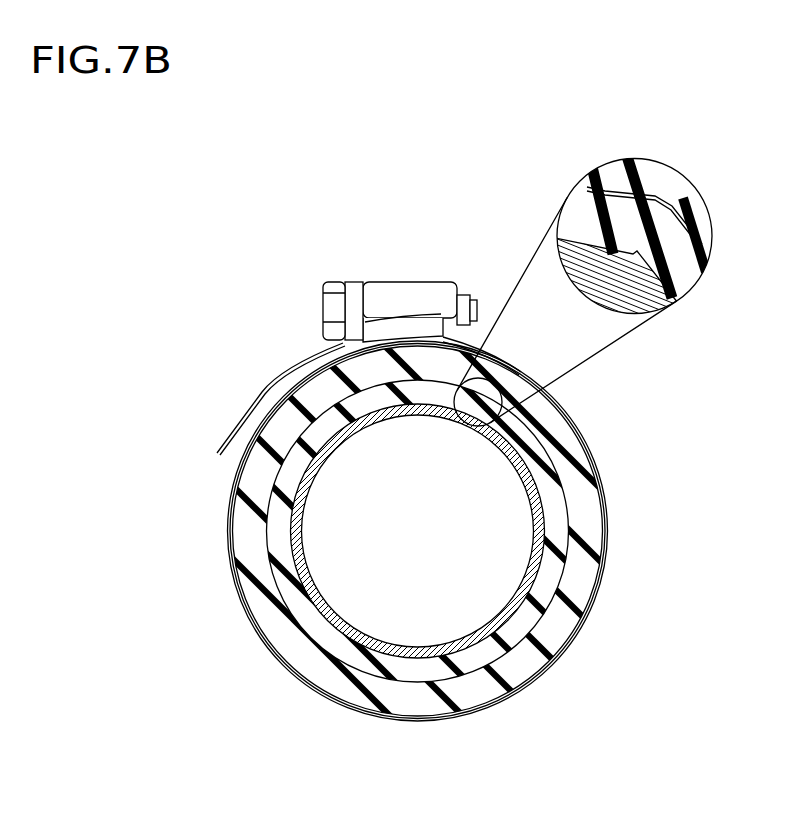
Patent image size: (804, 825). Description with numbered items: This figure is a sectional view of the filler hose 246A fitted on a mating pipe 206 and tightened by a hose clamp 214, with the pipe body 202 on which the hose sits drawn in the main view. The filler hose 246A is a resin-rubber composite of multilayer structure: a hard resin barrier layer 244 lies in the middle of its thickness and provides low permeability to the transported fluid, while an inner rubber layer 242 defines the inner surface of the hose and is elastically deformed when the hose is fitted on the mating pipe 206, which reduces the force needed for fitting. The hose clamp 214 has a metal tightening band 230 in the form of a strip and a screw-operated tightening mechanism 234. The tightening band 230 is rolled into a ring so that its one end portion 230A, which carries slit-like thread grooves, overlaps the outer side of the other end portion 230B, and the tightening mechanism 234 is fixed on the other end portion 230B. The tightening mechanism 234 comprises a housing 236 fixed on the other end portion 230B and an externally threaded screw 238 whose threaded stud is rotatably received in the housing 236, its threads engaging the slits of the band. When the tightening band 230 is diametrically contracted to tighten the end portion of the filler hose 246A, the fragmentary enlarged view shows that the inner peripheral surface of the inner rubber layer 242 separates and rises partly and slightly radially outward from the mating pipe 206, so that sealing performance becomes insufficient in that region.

The tube 202 is at (656, 173).
The mating pipe 206 is at (556, 509).
The hose clamp 214 is at (418, 261).
The tightening band 230 is at (608, 557).
The one end portion 230A is at (262, 396).
The other end portion 230B is at (481, 339).
The tightening mechanism 234 is at (390, 272).
The housing 236 is at (434, 293).
The externally threaded screw 238 is at (336, 310).
The inner rubber layer 242 is at (551, 562).
The resin barrier layer 244 is at (566, 492).
The filler hose 246A is at (600, 400).